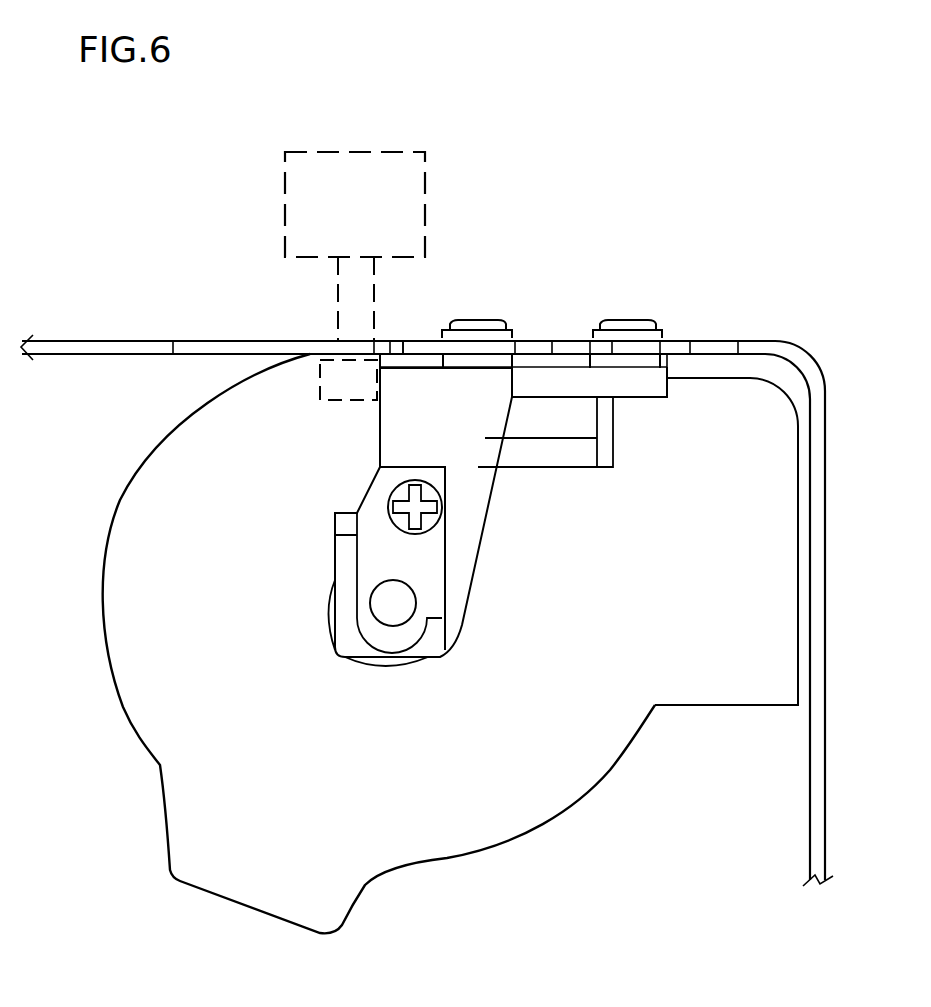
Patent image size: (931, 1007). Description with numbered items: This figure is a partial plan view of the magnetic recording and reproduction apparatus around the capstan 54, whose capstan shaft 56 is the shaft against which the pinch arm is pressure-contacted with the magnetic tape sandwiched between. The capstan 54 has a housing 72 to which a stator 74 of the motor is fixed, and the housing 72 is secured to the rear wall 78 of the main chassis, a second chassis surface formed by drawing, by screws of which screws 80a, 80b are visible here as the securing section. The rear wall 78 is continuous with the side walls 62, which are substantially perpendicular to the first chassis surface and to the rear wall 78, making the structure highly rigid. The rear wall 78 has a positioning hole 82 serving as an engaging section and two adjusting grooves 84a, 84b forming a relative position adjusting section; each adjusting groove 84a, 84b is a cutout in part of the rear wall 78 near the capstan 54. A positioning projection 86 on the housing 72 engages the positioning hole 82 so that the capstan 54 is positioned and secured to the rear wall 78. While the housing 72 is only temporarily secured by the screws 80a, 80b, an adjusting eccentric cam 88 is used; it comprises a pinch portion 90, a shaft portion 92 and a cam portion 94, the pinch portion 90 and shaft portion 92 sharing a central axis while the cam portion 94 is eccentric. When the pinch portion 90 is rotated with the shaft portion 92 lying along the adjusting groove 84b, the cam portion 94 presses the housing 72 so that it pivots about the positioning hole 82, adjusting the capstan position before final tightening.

The capstan 54 is at (545, 798).
The capstan shaft 56 is at (393, 615).
The side walls 62 is at (808, 738).
The housing 72 is at (463, 528).
The stator 74 is at (152, 705).
The rear wall 78 is at (120, 338).
The screw 80a is at (487, 320).
The screw 80b is at (655, 320).
The positioning hole 82 is at (393, 338).
The adjusting groove 84a is at (713, 345).
The adjusting groove 84b is at (366, 334).
The positioning projection 86 is at (393, 365).
The adjusting eccentric cam 88 is at (307, 233).
The pinch portion 90 is at (367, 168).
The shaft portion 92 is at (350, 287).
The cam portion 94 is at (335, 400).